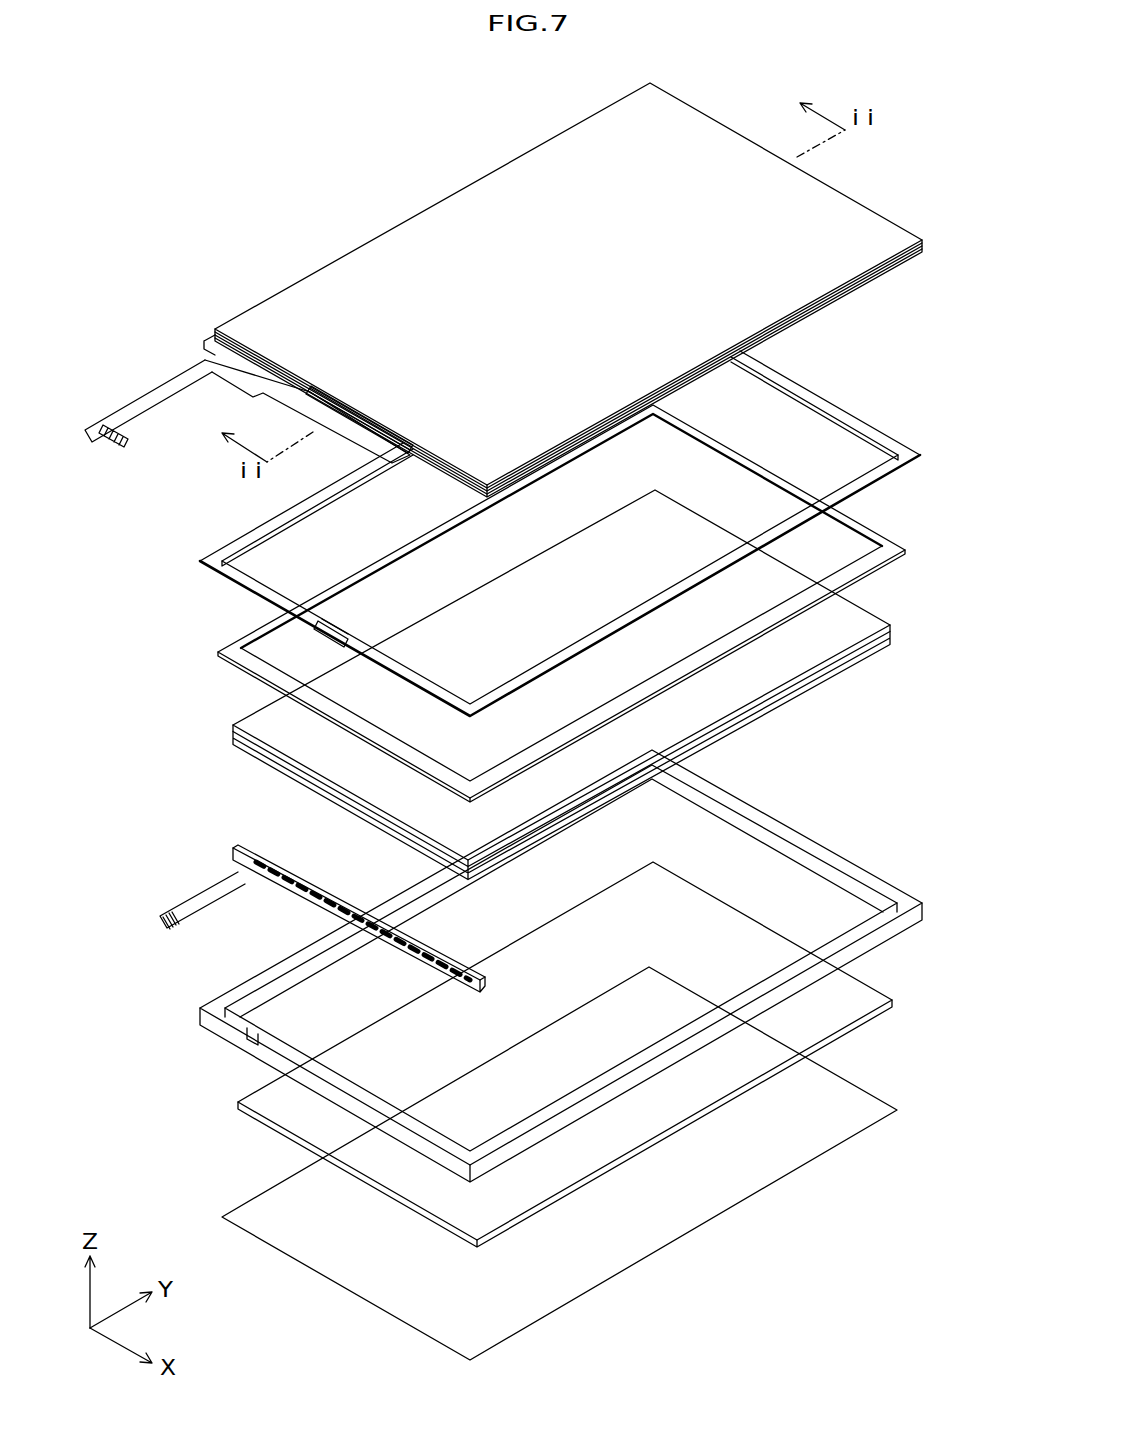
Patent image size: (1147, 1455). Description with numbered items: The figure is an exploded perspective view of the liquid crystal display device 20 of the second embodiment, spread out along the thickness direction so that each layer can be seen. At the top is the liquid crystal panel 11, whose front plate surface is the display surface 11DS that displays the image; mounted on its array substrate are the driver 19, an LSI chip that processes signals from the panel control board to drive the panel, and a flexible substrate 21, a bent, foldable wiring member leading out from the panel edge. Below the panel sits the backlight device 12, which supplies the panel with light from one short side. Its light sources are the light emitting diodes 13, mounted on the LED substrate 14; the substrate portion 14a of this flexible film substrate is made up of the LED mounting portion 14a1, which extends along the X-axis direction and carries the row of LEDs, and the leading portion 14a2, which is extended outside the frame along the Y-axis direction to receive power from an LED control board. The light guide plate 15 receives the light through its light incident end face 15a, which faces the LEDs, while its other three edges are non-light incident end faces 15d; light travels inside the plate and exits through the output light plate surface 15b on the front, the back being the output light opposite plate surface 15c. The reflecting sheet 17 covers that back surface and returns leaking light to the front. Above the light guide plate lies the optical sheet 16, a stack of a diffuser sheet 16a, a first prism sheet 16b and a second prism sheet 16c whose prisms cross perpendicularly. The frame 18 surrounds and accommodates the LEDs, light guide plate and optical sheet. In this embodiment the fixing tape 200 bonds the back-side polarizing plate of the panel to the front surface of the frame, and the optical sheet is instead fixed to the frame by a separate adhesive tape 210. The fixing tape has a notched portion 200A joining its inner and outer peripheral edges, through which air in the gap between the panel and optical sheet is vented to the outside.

The liquid crystal panel 11 is at (416, 234).
The display surface 11DS is at (492, 222).
The backlight device 12 is at (186, 1228).
The light emitting diodes 13 is at (340, 922).
The LED substrate 14 is at (238, 851).
The substrate portion 14a is at (255, 935).
The LED mounting portion 14a1 is at (285, 868).
The leading portion 14a2 is at (170, 922).
The light guide plate 15 is at (853, 976).
The light incident end face 15a is at (272, 1123).
The output light plate surface 15b is at (680, 1085).
The output light opposite plate surface 15c is at (852, 1036).
The non-light incident end faces 15d is at (892, 1003).
The optical sheet 16 is at (937, 675).
The diffuser sheet 16a is at (780, 707).
The first prism sheet 16b is at (797, 683).
The second prism sheet 16c is at (808, 654).
The reflecting sheet 17 is at (570, 1268).
The frame 18 is at (808, 850).
The driver 19 is at (343, 423).
The liquid crystal display device 20 is at (893, 157).
The flexible substrate 21 is at (176, 382).
The fixing tape 200 is at (910, 448).
The notched portion 200A is at (338, 633).
The adhesive tape 210 is at (893, 548).